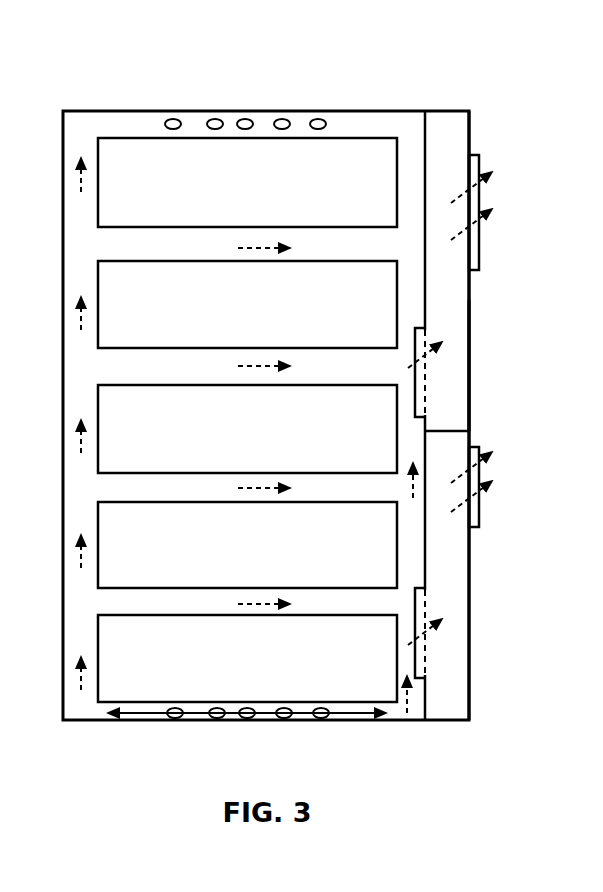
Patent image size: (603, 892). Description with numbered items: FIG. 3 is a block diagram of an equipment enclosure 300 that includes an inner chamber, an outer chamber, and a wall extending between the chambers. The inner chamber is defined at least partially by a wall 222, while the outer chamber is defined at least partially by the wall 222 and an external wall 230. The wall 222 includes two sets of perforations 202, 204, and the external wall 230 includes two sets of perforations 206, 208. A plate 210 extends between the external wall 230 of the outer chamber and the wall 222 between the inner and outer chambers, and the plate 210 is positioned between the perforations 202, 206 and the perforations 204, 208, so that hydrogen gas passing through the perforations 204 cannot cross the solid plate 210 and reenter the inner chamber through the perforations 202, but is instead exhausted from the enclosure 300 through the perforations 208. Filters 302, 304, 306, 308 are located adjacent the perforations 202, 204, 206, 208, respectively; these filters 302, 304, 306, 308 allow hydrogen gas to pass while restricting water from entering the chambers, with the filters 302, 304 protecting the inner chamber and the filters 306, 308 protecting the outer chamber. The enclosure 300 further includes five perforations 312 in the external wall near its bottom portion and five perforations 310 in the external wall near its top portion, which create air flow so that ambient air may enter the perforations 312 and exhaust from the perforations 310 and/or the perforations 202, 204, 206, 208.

The equipment enclosure 300 is at (96, 68).
The perforations 310 is at (243, 119).
The perforations 312 is at (217, 719).
The perforations 202 is at (423, 378).
The perforations 204 is at (425, 603).
The perforations 206 is at (468, 192).
The perforations 208 is at (462, 516).
The plate 210 is at (452, 432).
The wall 222 is at (427, 556).
The external wall 230 is at (470, 355).
The filter 302 is at (412, 325).
The filter 304 is at (418, 680).
The filter 306 is at (479, 242).
The filter 308 is at (480, 508).